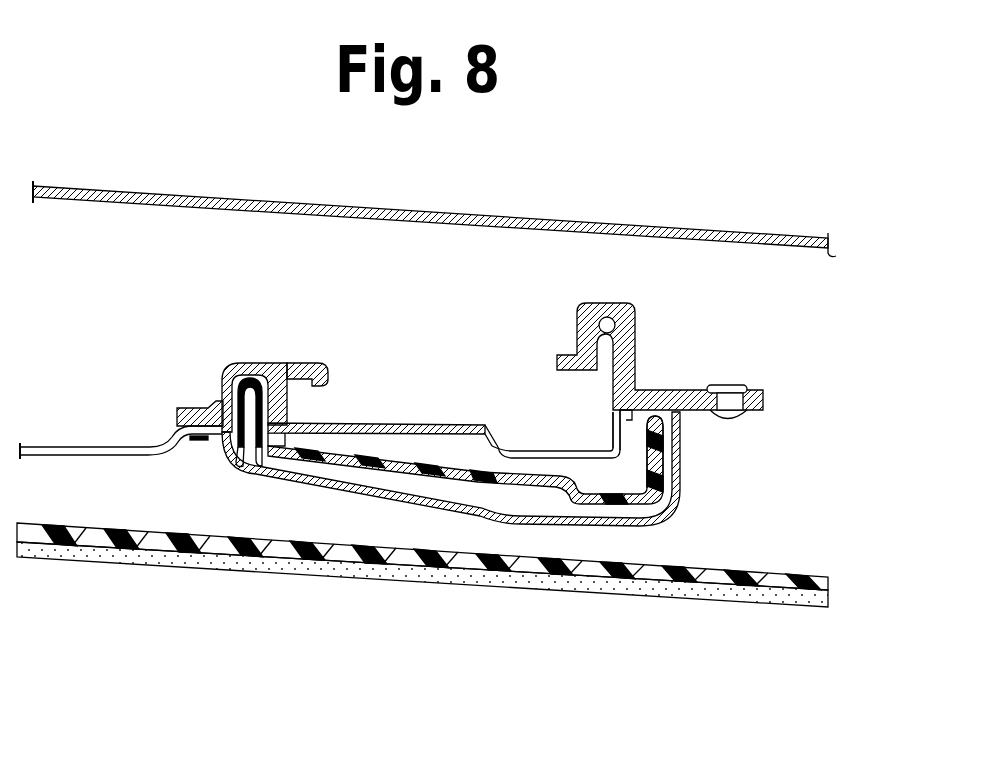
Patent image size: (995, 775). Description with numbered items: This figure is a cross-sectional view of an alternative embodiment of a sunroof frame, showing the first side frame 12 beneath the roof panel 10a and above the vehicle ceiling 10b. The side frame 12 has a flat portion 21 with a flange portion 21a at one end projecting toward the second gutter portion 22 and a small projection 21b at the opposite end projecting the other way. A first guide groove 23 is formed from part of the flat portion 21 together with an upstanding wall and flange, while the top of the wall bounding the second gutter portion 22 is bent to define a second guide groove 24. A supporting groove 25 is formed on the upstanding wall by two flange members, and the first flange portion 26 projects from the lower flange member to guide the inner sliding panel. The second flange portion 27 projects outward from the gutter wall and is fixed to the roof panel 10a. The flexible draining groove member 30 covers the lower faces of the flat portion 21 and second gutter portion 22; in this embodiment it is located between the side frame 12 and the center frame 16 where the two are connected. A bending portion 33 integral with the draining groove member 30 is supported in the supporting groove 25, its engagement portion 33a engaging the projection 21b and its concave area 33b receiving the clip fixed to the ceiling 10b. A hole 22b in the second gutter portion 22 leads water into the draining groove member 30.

The roof panel 10a is at (497, 207).
The vehicle ceiling 10b is at (410, 578).
The side frame 12 is at (614, 465).
The center frame 16 is at (487, 523).
The flat portion 21 is at (350, 424).
The flange portion 21a is at (485, 426).
The small projection 21b is at (283, 447).
The second gutter portion 22 is at (500, 447).
The hole 22b is at (549, 452).
The first guide groove 23 is at (322, 384).
The second guide groove 24 is at (633, 325).
The supporting groove 25 is at (215, 443).
The first flange portion 26 is at (218, 402).
The second flange portion 27 is at (755, 393).
The draining groove member 30 is at (343, 468).
The bending portion 33 is at (256, 377).
The engagement portion 33a is at (251, 455).
The concave area 33b is at (238, 448).